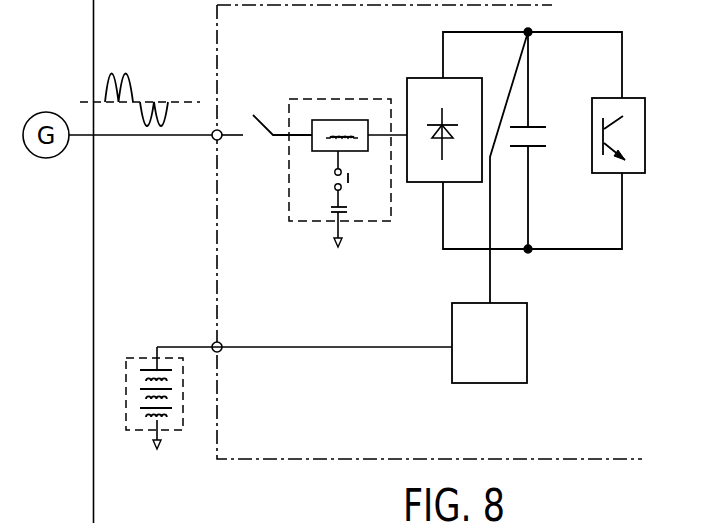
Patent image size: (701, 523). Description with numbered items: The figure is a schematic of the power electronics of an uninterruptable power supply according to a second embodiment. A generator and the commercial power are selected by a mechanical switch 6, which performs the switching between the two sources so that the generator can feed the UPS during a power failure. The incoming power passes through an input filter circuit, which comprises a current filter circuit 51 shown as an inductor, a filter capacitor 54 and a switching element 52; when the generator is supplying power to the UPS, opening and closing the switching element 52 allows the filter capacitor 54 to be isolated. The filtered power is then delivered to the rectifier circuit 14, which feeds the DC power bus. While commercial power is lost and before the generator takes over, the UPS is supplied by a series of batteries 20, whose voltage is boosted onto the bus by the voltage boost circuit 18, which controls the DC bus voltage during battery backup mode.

The mechanical switch 6 is at (267, 139).
The rectifier circuit 14 is at (425, 78).
The voltage boost circuit 18 is at (490, 385).
The series of batteries 20 is at (140, 355).
The inductor 51 is at (338, 120).
The switching element 52 is at (350, 178).
The filter capacitor 54 is at (328, 212).